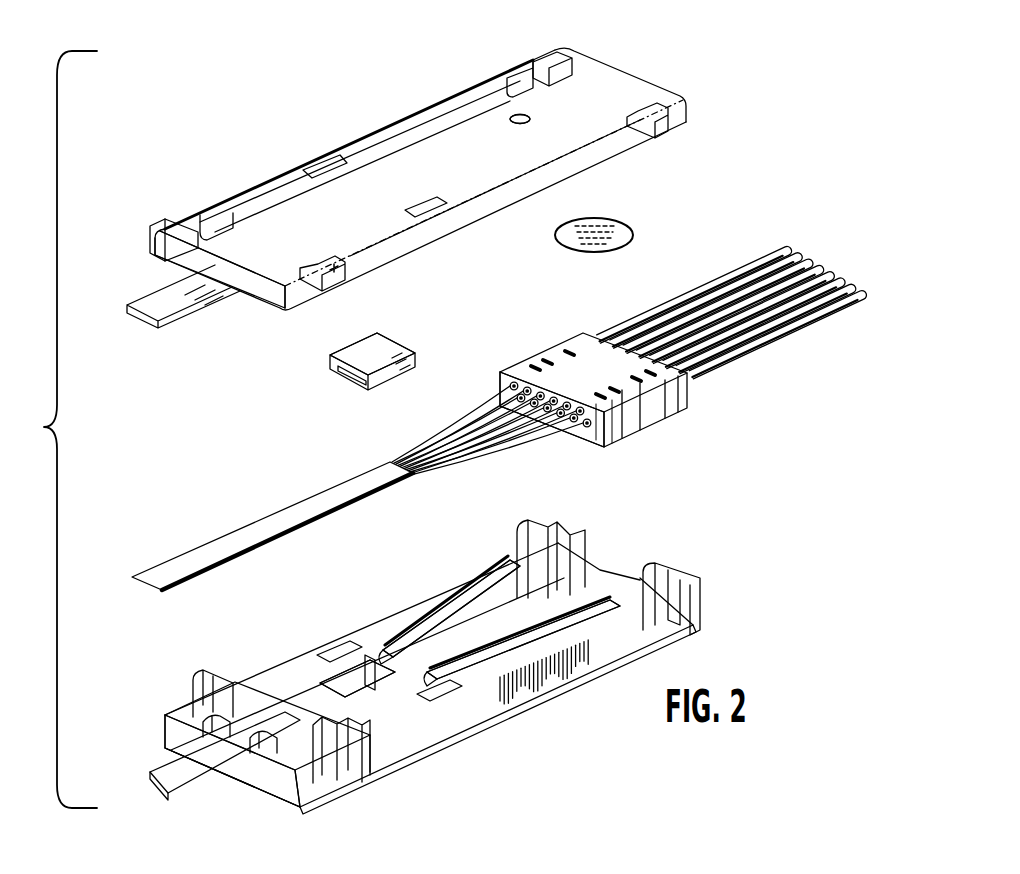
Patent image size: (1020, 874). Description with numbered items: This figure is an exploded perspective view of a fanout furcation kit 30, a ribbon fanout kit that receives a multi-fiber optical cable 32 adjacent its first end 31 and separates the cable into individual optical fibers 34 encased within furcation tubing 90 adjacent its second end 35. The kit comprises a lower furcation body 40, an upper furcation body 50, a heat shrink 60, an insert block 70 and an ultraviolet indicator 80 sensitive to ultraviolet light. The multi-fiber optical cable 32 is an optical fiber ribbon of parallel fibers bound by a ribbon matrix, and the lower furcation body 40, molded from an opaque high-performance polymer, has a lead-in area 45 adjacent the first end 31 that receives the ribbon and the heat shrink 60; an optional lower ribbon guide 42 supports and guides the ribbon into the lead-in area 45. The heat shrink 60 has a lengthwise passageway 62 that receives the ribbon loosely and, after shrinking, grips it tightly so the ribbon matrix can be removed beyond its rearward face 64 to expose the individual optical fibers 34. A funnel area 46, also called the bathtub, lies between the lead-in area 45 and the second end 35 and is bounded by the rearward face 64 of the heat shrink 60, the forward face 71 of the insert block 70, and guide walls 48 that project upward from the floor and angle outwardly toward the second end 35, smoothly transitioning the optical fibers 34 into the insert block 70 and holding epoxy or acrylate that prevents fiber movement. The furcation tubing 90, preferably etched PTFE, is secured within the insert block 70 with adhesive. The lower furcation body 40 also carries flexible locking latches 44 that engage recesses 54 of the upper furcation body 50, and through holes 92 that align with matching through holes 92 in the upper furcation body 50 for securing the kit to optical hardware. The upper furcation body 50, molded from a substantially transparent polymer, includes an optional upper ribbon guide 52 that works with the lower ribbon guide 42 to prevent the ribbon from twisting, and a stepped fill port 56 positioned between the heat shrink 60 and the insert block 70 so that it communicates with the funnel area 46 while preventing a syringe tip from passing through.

The fanout furcation kit 30 is at (42, 427).
The first end 31 is at (167, 263).
The multi-fiber optical cable 32 is at (247, 523).
The optical fibers 34 is at (480, 452).
The second end 35 is at (617, 63).
The lower furcation body 40 is at (447, 740).
The lower ribbon guide 42 is at (192, 790).
The locking latches 44 is at (197, 695).
The lead-in area 45 is at (370, 687).
The funnel area 46 is at (480, 627).
The guide walls 48 is at (533, 637).
The upper furcation body 50 is at (420, 108).
The upper ribbon guide 52 is at (180, 323).
The recesses 54 is at (203, 223).
The fill port 56 is at (508, 117).
The heat shrink 60 is at (360, 387).
The passageway 62 is at (340, 368).
The rearward face 64 is at (390, 337).
The insert block 70 is at (550, 347).
The forward face 71 is at (593, 437).
The ultraviolet indicator 80 is at (632, 222).
The furcation tubing 90 is at (837, 293).
The through holes 92 is at (320, 160).